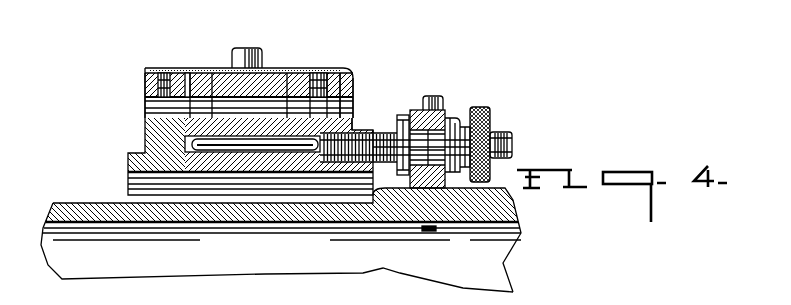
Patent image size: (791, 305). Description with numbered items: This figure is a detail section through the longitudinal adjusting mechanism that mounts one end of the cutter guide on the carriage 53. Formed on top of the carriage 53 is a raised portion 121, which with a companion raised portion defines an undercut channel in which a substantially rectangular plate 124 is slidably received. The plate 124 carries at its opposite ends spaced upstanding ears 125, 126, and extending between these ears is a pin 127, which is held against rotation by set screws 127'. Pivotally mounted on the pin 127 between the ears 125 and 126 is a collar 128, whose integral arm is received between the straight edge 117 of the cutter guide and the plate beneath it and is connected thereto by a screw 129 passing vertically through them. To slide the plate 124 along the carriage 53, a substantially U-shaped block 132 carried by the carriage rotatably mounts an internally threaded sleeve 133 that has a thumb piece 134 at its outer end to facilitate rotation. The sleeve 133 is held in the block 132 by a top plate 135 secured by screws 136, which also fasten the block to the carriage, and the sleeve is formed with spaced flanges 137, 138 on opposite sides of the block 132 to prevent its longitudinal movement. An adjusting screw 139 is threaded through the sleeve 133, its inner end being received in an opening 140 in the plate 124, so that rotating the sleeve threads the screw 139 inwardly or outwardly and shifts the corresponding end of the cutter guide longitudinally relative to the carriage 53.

The supporting truck or carriage 53 is at (88, 183).
The horizontal straight edge 117 is at (210, 72).
The raised portion 121 is at (170, 198).
The rectangular plate 124 is at (288, 160).
The upstanding ear 125 is at (160, 135).
The upstanding ear 126 is at (352, 80).
The pin 127 is at (261, 80).
The set screw 127' is at (334, 80).
The collar 128 is at (208, 70).
The screw or fastening element 129 is at (245, 53).
The U-shaped block 132 is at (435, 232).
The internally threaded sleeve 133 is at (448, 117).
The thumb piece 134 is at (489, 122).
The top plate 135 is at (418, 112).
The screw or fastening element 136 is at (433, 110).
The flange 137 is at (402, 176).
The flange 138 is at (467, 227).
The adjusting screw 139 is at (378, 133).
The opening 140 is at (345, 168).